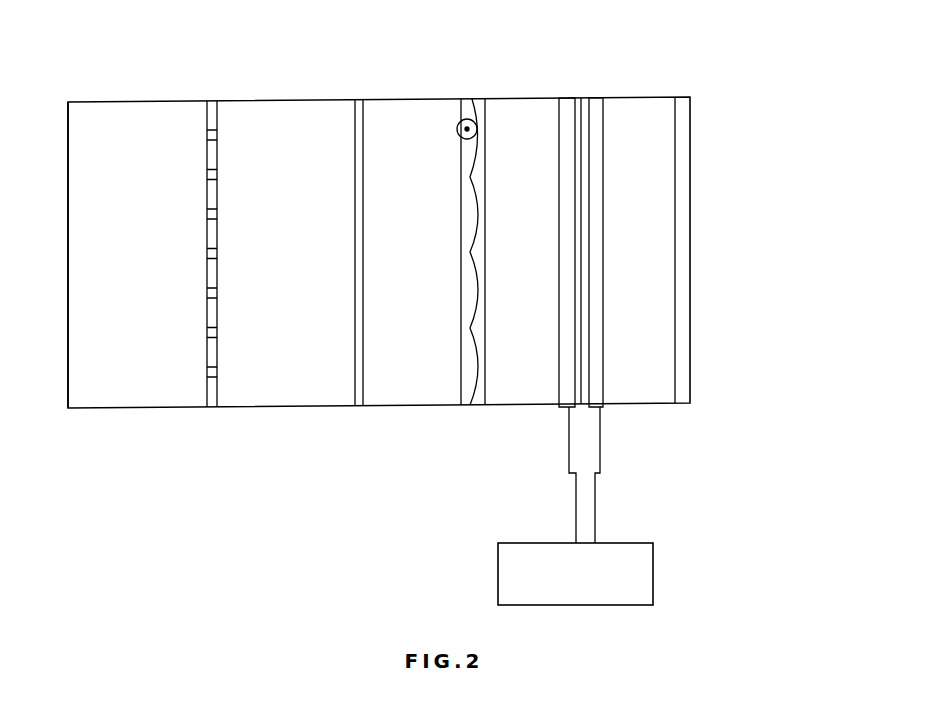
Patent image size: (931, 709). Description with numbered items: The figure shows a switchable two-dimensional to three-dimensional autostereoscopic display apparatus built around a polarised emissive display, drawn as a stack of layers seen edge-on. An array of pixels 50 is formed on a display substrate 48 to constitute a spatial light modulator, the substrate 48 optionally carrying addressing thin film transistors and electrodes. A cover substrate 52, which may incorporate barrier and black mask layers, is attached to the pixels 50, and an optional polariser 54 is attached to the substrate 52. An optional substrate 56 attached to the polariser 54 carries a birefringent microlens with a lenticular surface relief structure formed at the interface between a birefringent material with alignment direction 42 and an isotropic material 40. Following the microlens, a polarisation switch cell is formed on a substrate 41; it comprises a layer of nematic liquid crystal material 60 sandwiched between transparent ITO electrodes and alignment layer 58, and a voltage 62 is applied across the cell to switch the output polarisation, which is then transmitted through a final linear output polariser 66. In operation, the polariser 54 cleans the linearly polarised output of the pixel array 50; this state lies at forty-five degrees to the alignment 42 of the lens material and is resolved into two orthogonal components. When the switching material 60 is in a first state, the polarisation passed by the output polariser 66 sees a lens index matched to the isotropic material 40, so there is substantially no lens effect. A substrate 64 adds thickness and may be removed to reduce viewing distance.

The isotropic material 40 is at (480, 402).
The substrate 41 is at (520, 402).
The birefringent material alignment direction 42 is at (459, 120).
The display substrate 48 is at (138, 408).
The array of pixels 50 is at (213, 407).
The cover substrate 52 is at (287, 407).
The polariser 54 is at (363, 406).
The substrate 56 is at (413, 407).
The transparent ITO electrodes and alignment layer 58 is at (563, 97).
The nematic liquid crystal material 60 is at (585, 97).
The voltage 62 is at (575, 506).
The substrate 64 is at (632, 97).
The linear output polariser 66 is at (683, 403).